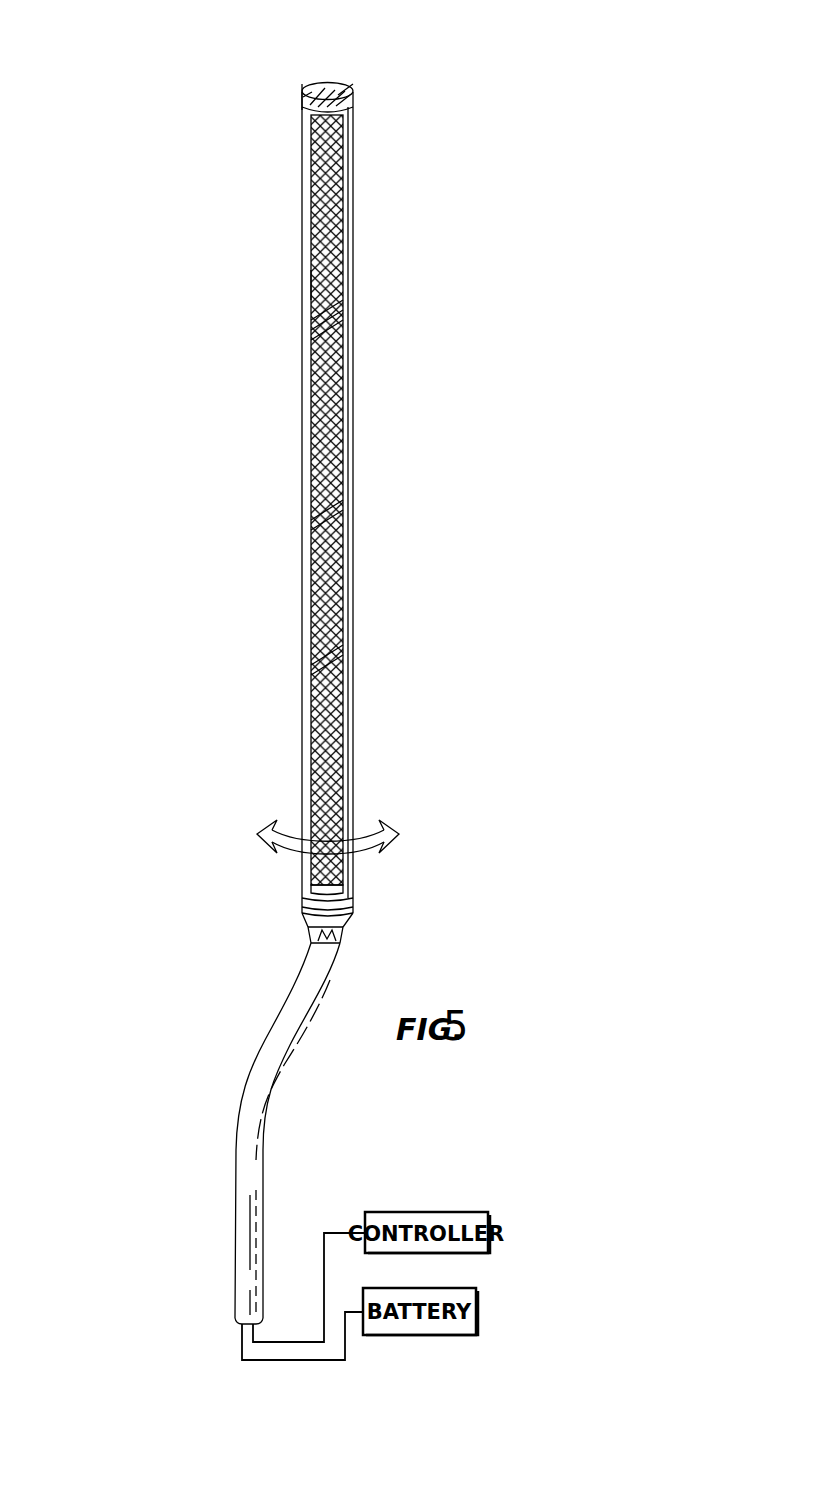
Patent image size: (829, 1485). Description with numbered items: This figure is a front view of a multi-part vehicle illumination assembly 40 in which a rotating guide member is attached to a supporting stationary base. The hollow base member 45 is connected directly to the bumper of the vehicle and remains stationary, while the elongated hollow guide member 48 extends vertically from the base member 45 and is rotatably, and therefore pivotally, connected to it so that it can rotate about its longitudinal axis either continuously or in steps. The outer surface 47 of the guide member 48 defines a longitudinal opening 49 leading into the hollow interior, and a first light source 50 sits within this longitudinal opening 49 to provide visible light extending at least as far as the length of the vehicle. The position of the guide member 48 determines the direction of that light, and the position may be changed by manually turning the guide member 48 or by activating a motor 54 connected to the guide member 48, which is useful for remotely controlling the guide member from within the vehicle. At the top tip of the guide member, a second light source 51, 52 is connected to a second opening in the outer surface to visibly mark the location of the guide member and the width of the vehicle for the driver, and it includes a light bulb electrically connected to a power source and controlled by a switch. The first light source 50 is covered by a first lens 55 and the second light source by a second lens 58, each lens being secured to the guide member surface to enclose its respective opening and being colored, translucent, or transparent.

The multi-part assembly 40 is at (282, 153).
The base member 45 is at (243, 1075).
The outer surface 47 is at (350, 258).
The guide member 48 is at (352, 620).
The longitudinal opening 49 is at (310, 290).
The first light source 50 is at (322, 520).
The second light source 51 is at (345, 98).
The second light source 52 is at (328, 88).
The motor 54 is at (345, 932).
The first lens 55 is at (345, 890).
The second lens 58 is at (302, 97).